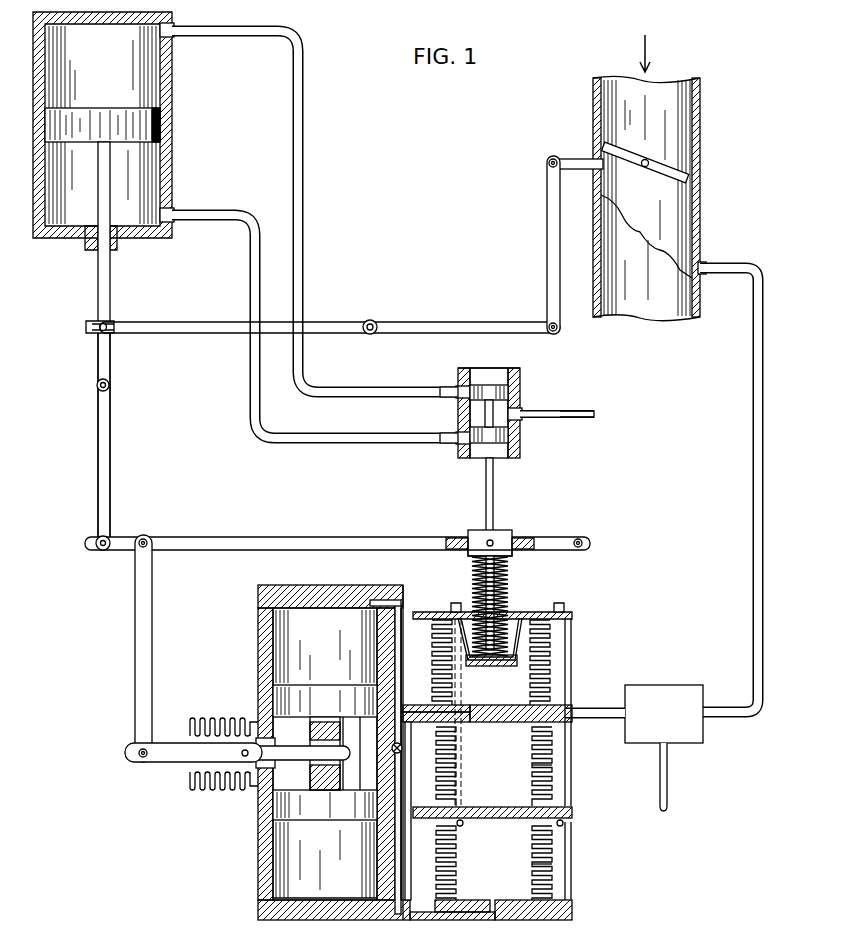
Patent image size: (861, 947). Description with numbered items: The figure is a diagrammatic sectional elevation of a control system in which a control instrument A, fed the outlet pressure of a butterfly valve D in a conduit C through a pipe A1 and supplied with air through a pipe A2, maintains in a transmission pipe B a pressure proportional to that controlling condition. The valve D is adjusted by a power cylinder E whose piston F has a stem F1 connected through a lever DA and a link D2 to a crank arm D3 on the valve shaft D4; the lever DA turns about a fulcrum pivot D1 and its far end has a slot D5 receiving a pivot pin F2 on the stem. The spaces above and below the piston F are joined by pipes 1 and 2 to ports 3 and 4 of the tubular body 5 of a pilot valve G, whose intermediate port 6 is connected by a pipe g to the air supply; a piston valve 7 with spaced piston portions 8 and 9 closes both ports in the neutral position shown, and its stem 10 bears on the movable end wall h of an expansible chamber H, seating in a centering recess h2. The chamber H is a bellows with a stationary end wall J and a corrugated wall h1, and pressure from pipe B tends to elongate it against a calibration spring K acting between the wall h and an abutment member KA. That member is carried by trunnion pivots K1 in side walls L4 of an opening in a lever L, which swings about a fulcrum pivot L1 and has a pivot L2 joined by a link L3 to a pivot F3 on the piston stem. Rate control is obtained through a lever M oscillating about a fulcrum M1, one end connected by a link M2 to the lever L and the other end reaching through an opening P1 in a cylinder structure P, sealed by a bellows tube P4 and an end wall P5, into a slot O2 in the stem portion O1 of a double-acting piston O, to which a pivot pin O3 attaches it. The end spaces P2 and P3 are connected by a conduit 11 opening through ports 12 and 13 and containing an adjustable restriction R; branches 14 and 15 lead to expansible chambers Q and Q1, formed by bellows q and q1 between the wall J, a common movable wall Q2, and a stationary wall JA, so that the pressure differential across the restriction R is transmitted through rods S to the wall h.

The power cylinder E is at (172, 78).
The piston F is at (150, 125).
The pipe 1 is at (302, 195).
The pipe 2 is at (259, 280).
The piston stem F1 is at (110, 281).
The pivot pin F2 is at (84, 326).
The slot D5 is at (106, 325).
The lever DA is at (193, 331).
The fulcrum pivot D1 is at (370, 320).
The pivot F3 is at (97, 385).
The link L3 is at (110, 462).
The conduit C is at (604, 252).
The butterfly valve D is at (668, 180).
The valve shaft D4 is at (646, 158).
The crank arm D3 is at (560, 160).
The link D2 is at (546, 255).
The pipe A1 is at (744, 440).
The control instrument A is at (662, 682).
The pipe A2 is at (667, 800).
The transmission pipe B is at (606, 712).
The pilot valve G is at (561, 459).
The valve body 5 is at (525, 372).
The piston portion 8 is at (520, 386).
The piston portion 9 is at (508, 436).
The piston valve 7 is at (485, 417).
The port 3 is at (458, 388).
The port 4 is at (462, 446).
The port 6 is at (520, 410).
The pipe g is at (570, 421).
The piston stem 10 is at (494, 482).
The lever L is at (250, 545).
The pivot L2 is at (100, 550).
The fulcrum pivot L1 is at (585, 540).
The abutment member KA is at (476, 530).
The side walls L4 is at (510, 556).
The trunnion pivots K1 is at (496, 530).
The calibration spring K is at (508, 604).
The movable end wall h is at (522, 640).
The centering recess h2 is at (495, 668).
The corrugated bellows wall h1 is at (548, 657).
The expansible chamber H is at (520, 686).
The cylinder structure P is at (325, 585).
The upper end wall port 12 is at (366, 606).
The conduit 11 is at (397, 645).
The branch 14 is at (416, 714).
The stationary end wall J is at (490, 722).
The rods S is at (456, 792).
The expansible chamber Q is at (520, 748).
The corrugated bellows q is at (552, 772).
The movable wall Q2 is at (478, 820).
The expansible chamber Q1 is at (520, 880).
The corrugated bellows q1 is at (552, 866).
The branch 15 is at (478, 905).
The stationary end wall JA is at (525, 920).
The bottom end wall port 13 is at (364, 894).
The upper end space P2 is at (273, 622).
The lower end space P3 is at (290, 858).
The slot O2 is at (325, 716).
The piston element O is at (283, 806).
The stem portion O1 is at (326, 790).
The pivot pin O3 is at (350, 744).
The fulcrum M1 is at (240, 758).
The opening P1 is at (258, 742).
The bellows tube P4 is at (225, 720).
The bellows end wall P5 is at (190, 738).
The link M2 is at (136, 626).
The lever M is at (172, 766).
The restriction R is at (402, 748).